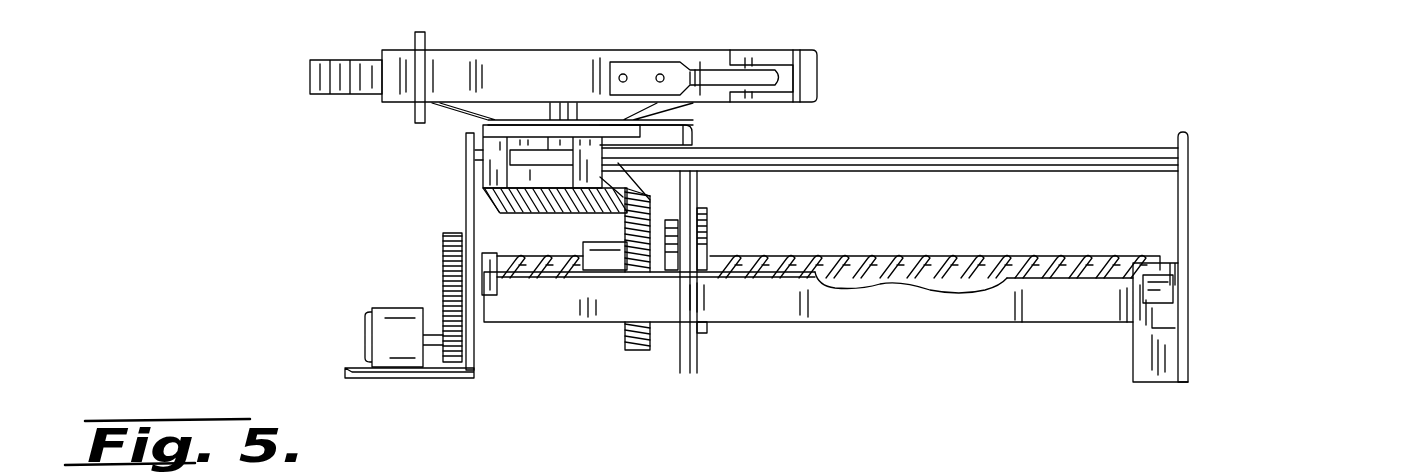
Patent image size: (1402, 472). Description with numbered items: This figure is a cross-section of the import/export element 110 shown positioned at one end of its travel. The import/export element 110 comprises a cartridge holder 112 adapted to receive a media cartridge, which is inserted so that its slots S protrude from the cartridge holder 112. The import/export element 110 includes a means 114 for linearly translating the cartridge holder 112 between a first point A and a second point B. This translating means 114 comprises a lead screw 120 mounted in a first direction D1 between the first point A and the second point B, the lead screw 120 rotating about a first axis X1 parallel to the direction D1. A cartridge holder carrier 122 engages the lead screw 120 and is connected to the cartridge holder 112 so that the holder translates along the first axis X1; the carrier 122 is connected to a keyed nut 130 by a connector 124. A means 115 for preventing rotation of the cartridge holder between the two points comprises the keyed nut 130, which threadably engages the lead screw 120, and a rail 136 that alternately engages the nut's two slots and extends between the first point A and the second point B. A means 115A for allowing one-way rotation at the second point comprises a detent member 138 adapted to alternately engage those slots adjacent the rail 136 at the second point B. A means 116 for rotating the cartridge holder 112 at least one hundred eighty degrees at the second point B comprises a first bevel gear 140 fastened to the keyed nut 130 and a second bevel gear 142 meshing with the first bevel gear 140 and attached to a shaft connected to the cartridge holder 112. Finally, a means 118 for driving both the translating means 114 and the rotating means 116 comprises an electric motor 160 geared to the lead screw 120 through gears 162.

The import/export element 110 is at (1052, 97).
The cartridge holder 112 is at (493, 48).
The slots S is at (338, 68).
The means for linearly translating 114 is at (828, 237).
The means for preventing rotation 115 is at (807, 306).
The means for allowing one-way rotation 115A is at (1167, 287).
The means for rotating 116 is at (740, 244).
The means for driving 118 is at (388, 374).
The lead screw 120 is at (1048, 257).
The cartridge holder carrier 122 is at (483, 175).
The connector 124 is at (690, 135).
The keyed nut 130 is at (710, 227).
The rail 136 is at (870, 308).
The detent member 138 is at (1198, 322).
The first bevel gear 140 is at (625, 343).
The second bevel gear 142 is at (560, 197).
The electric motor 160 is at (397, 312).
The gears 162 is at (448, 362).
The first point A is at (472, 385).
The second point B is at (1137, 392).
The first direction D1 is at (1033, 233).
The first axis X1 is at (1198, 272).